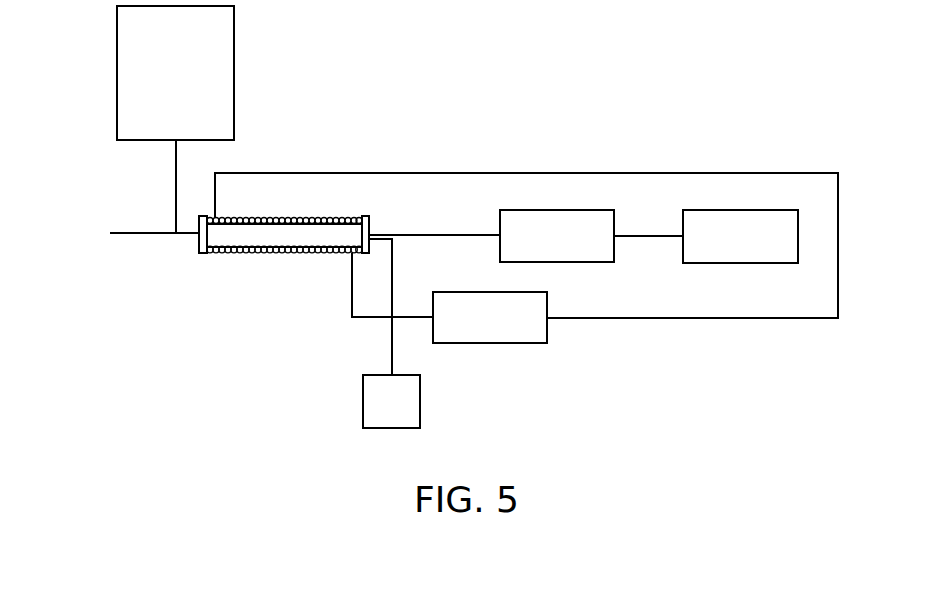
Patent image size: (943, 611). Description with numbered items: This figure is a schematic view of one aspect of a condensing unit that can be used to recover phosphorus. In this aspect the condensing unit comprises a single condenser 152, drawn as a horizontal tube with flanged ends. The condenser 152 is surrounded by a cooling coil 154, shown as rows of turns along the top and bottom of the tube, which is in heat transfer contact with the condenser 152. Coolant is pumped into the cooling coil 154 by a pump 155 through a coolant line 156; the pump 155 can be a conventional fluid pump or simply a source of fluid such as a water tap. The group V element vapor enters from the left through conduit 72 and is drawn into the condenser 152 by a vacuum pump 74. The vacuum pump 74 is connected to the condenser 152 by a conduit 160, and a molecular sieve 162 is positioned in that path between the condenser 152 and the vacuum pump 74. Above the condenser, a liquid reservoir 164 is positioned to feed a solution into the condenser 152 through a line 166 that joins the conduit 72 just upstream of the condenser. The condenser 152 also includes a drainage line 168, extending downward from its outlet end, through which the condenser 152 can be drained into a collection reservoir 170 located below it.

The liquid reservoir 164 is at (234, 77).
The line 166 is at (176, 180).
The conduit 72 is at (136, 232).
The condenser 152 is at (198, 250).
The cooling coil 154 is at (230, 256).
The conduit 160 is at (440, 235).
The molecular sieve 162 is at (570, 210).
The vacuum pump 74 is at (740, 210).
The pump 155 is at (547, 328).
The coolant line 156 is at (806, 320).
The drainage line 168 is at (392, 350).
The collection reservoir 170 is at (420, 405).